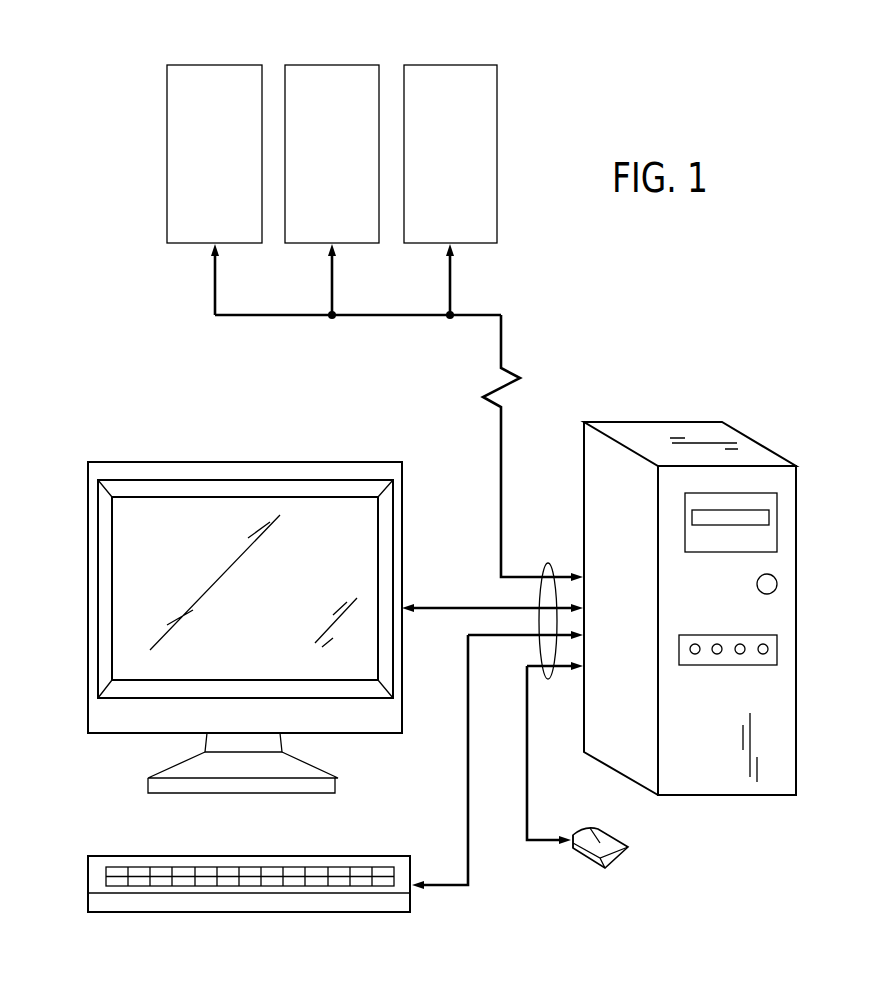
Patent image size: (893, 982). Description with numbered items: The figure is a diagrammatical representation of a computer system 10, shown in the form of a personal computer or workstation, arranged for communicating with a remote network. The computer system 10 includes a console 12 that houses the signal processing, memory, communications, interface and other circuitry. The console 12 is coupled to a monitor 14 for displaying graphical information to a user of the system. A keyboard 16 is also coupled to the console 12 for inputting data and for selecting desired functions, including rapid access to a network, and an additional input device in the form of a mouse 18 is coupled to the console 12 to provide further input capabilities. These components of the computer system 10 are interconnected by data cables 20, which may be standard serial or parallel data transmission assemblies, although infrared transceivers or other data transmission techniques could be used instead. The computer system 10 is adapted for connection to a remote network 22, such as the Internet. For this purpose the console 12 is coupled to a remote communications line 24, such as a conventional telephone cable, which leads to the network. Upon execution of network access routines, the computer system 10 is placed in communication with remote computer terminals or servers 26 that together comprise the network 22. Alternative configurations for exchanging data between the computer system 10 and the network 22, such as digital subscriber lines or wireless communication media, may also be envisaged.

The computer system 10 is at (84, 807).
The console 12 is at (778, 613).
The monitor 14 is at (141, 462).
The keyboard 16 is at (128, 912).
The mouse 18 is at (615, 862).
The data cables 20 is at (545, 572).
The remote network 22 is at (152, 288).
The remote communications line 24 is at (496, 386).
The remote computer terminals or servers 26 is at (317, 65).